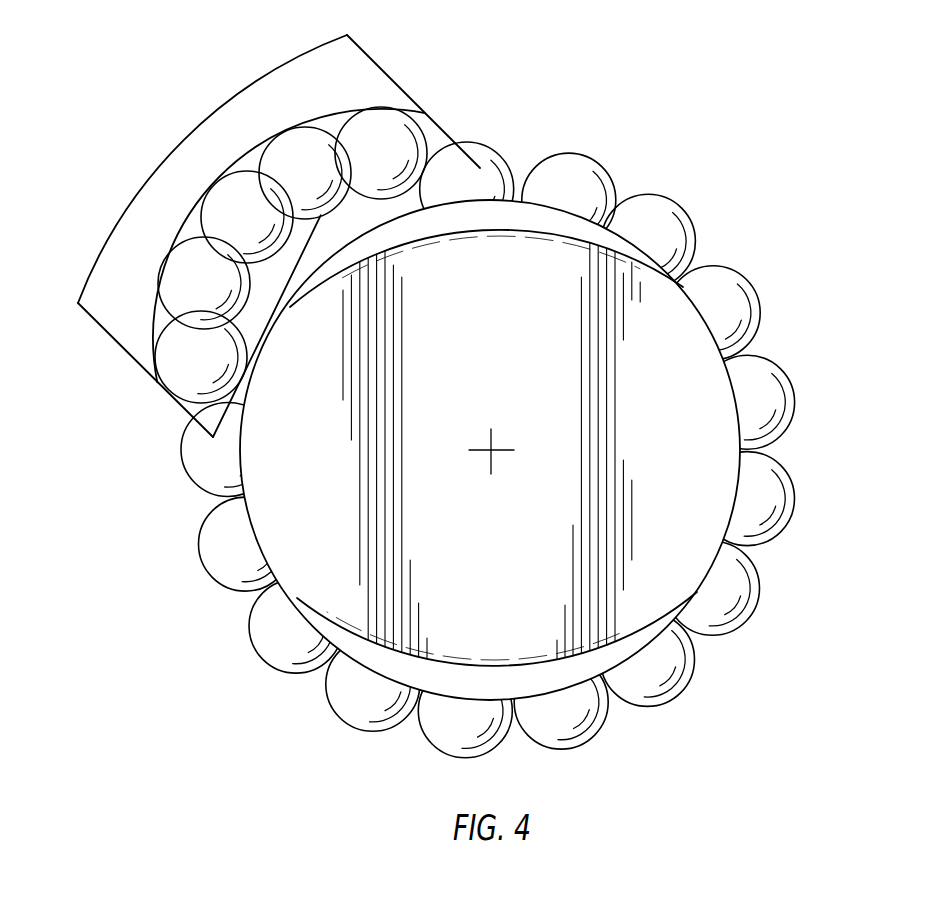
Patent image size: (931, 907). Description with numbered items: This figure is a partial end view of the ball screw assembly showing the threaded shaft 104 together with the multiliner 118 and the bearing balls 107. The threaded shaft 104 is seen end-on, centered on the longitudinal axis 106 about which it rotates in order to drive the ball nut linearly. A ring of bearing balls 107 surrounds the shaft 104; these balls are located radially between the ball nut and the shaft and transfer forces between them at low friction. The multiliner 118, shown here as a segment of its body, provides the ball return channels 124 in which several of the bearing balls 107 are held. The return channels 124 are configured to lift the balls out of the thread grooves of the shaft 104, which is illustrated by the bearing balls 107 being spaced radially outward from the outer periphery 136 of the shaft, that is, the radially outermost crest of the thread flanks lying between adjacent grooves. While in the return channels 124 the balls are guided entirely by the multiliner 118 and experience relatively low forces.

The threaded shaft 104 is at (640, 367).
The longitudinal axis 106 is at (498, 459).
The bearing balls 107 is at (575, 180).
The multiliner 118 is at (353, 76).
The ball return channels 124 is at (243, 138).
The outer periphery 136 is at (288, 307).